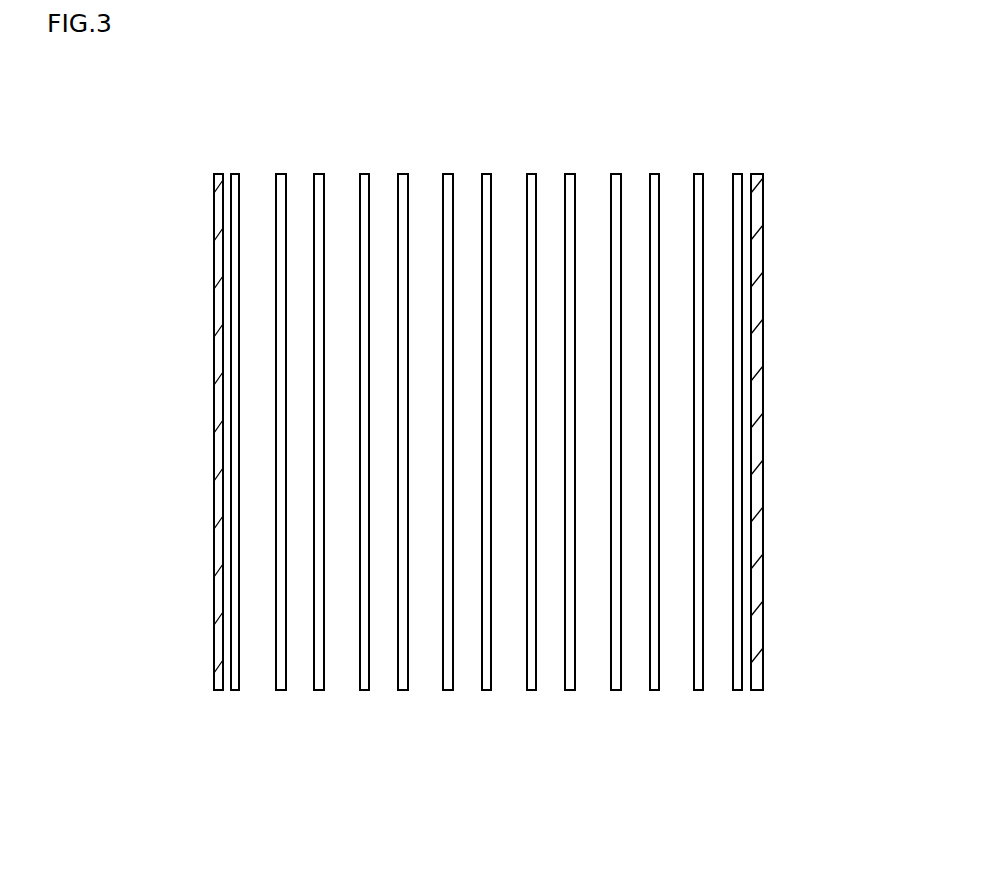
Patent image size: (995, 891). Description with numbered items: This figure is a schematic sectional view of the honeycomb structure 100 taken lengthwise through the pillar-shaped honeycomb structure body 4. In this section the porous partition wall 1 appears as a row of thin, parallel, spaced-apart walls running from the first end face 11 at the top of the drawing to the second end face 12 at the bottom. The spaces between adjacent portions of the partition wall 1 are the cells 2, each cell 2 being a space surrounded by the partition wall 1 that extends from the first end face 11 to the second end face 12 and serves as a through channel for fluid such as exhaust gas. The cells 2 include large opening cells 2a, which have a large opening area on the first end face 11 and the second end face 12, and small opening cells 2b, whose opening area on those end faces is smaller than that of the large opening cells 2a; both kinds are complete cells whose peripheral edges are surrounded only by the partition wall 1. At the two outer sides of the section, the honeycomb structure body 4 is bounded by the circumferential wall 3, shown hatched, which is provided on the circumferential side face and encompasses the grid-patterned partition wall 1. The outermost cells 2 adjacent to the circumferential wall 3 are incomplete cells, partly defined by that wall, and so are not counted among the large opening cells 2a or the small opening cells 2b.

The honeycomb structure 100 is at (850, 46).
The first end face 11 is at (244, 151).
The second end face 12 is at (258, 702).
The cells 2 is at (555, 153).
The large opening cells 2a is at (503, 218).
The small opening cells 2b is at (548, 218).
The partition wall 1 is at (656, 188).
The honeycomb structure body 4 is at (772, 182).
The circumferential wall 3 is at (763, 322).